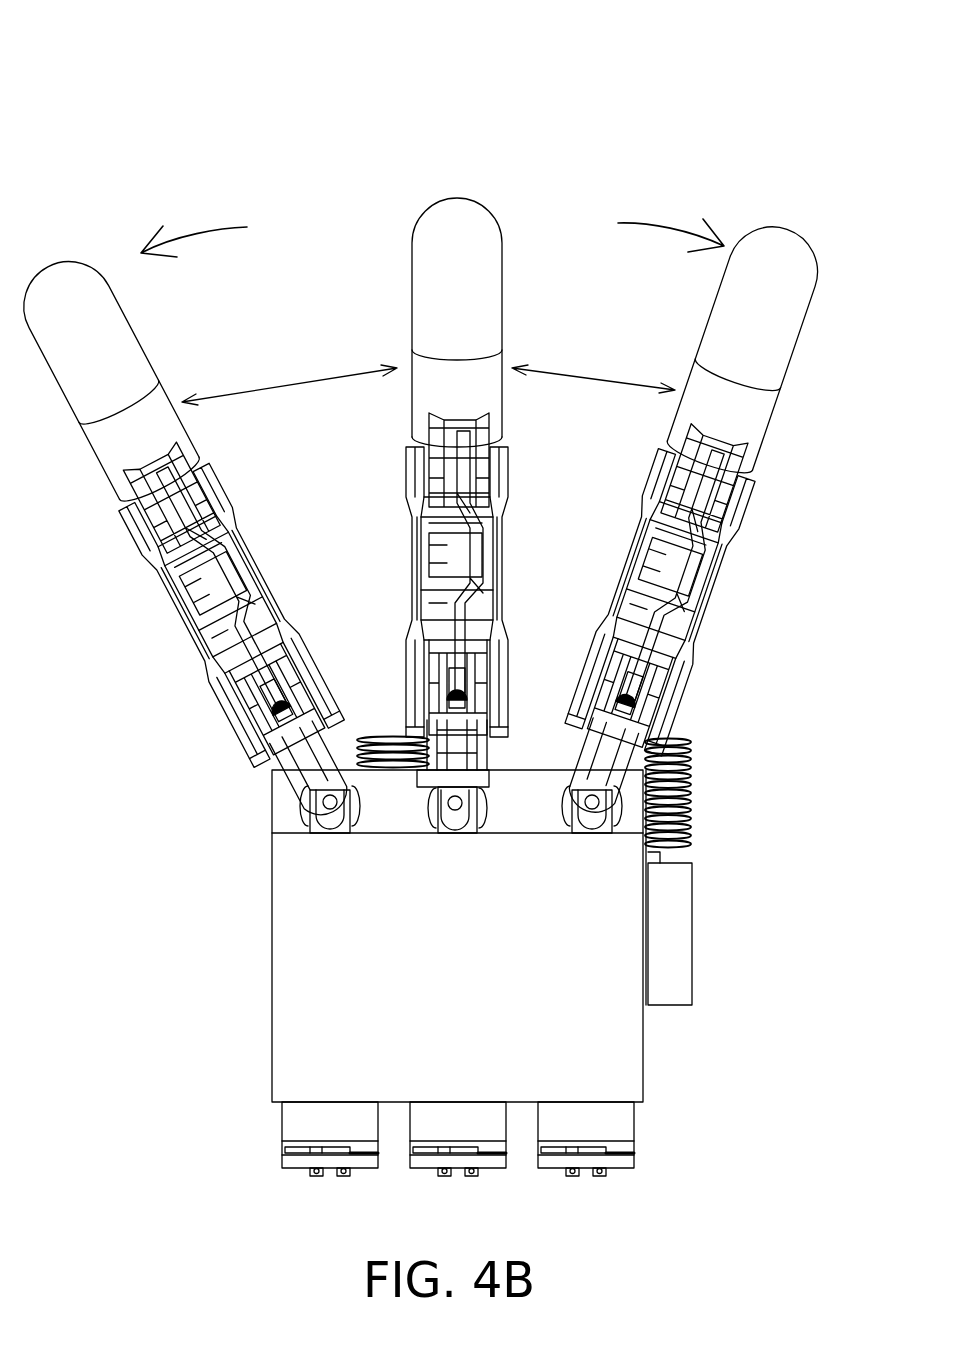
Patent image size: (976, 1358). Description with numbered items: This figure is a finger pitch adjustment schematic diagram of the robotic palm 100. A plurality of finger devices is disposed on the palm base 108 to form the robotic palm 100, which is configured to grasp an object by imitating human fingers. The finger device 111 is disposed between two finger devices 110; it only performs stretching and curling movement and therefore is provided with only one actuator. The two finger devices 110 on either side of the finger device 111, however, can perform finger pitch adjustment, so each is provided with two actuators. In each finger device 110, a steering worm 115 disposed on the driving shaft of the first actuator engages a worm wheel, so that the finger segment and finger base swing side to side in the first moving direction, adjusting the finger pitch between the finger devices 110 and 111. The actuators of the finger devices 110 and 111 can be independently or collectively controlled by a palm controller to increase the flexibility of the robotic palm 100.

The robotic palm 100 is at (80, 22).
The palm base 108 is at (315, 944).
The finger device 110 is at (52, 222).
The finger device 111 is at (459, 170).
The steering worm 115 is at (381, 737).